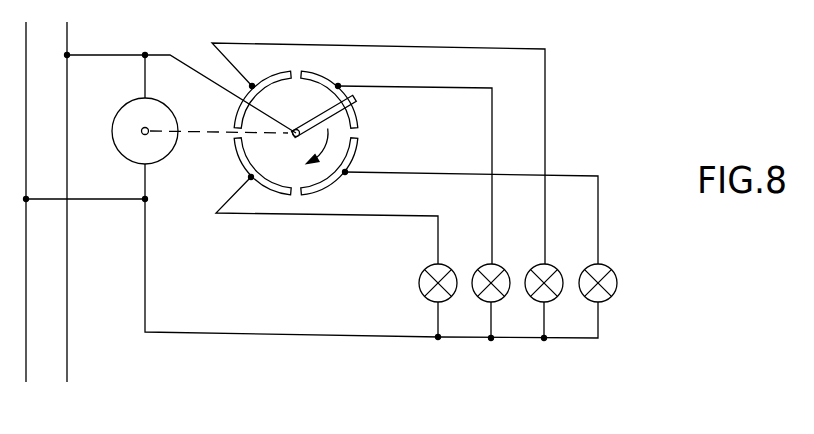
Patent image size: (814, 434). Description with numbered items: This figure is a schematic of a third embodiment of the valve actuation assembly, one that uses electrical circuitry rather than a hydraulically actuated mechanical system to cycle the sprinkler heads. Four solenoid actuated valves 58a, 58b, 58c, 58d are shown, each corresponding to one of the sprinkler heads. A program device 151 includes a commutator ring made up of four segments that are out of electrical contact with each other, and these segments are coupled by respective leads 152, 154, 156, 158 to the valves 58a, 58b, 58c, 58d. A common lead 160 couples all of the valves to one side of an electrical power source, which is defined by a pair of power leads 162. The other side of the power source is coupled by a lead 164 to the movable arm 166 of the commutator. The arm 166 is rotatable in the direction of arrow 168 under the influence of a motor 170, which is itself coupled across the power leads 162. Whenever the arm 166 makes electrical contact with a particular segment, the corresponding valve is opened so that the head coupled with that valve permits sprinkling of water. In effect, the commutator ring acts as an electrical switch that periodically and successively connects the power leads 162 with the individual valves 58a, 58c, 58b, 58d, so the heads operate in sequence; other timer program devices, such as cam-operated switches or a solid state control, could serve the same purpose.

The solenoid actuated valve 58a is at (444, 298).
The solenoid actuated valve 58b is at (497, 298).
The solenoid actuated valve 58c is at (550, 298).
The solenoid actuated valve 58d is at (604, 298).
The program device 151 is at (237, 87).
The lead 152 is at (265, 214).
The lead 154 is at (492, 147).
The lead 156 is at (547, 88).
The lead 158 is at (598, 248).
The common lead 160 is at (288, 336).
The power leads 162 is at (26, 353).
The lead 164 is at (152, 55).
The movable arm 166 is at (350, 110).
The arrow 168 is at (330, 152).
The motor 170 is at (160, 148).